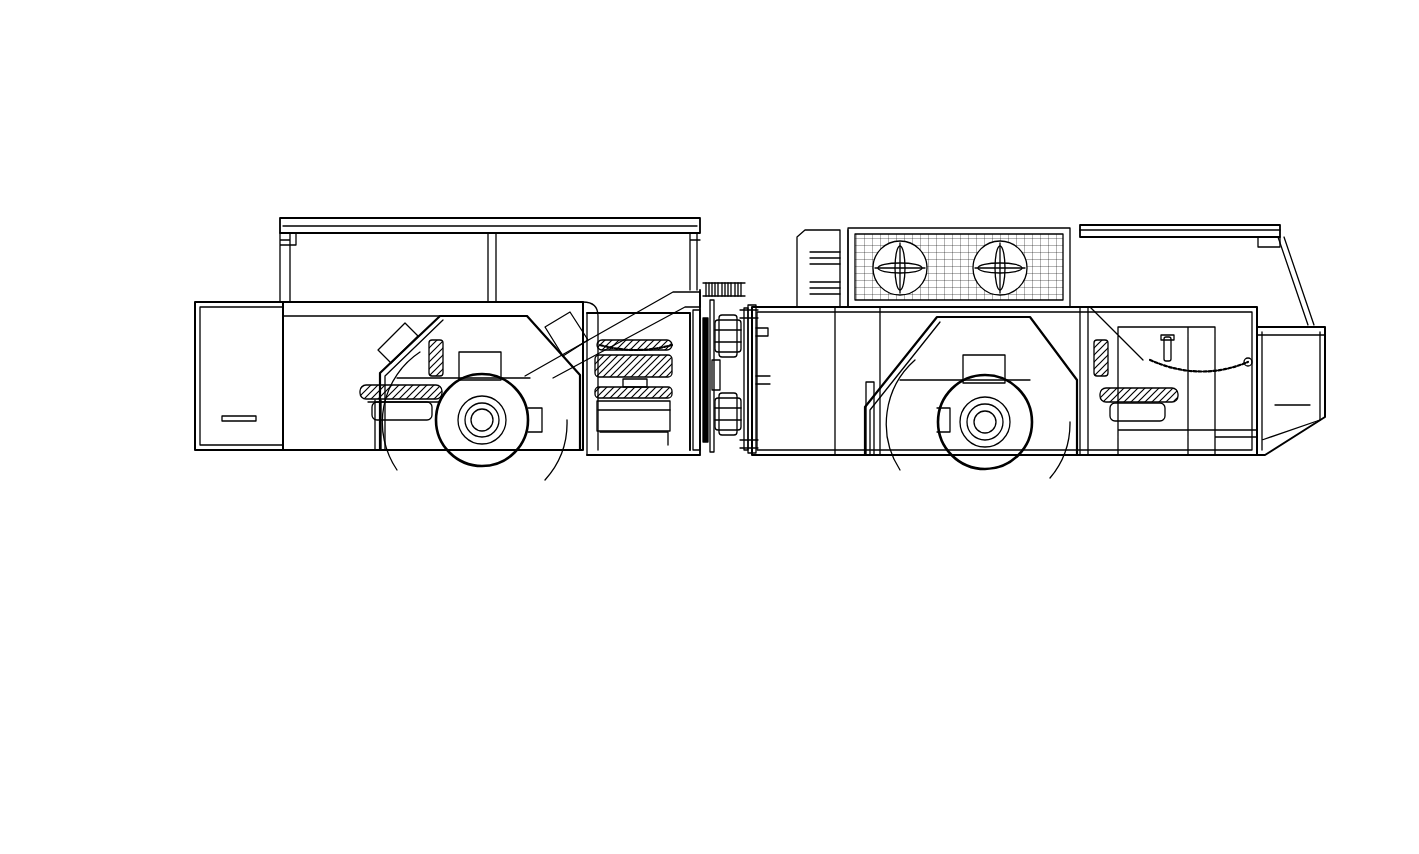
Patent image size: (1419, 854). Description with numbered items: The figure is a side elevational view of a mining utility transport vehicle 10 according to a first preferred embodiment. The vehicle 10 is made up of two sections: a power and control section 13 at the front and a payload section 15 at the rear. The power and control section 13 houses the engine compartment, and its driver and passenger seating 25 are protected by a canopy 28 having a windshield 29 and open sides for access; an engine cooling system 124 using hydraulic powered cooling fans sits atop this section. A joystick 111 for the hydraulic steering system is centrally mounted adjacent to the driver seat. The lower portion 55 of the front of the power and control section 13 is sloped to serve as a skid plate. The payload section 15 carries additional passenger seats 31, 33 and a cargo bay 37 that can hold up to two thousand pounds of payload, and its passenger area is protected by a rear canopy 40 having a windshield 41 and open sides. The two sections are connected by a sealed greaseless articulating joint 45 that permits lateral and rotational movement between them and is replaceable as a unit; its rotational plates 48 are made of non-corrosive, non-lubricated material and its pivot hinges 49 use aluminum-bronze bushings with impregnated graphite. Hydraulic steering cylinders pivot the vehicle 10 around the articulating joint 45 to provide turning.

The vehicle 10 is at (697, 135).
The power and control section 13 is at (1085, 445).
The payload section 15 is at (310, 420).
The passenger seating 25 is at (1140, 398).
The canopy 28 is at (1185, 228).
The windshield 29 is at (1300, 275).
The passenger seat 31 is at (625, 400).
The passenger seat 33 is at (382, 395).
The cargo bay 37 is at (228, 343).
The rear canopy 40 is at (527, 228).
The windshield 41 is at (700, 260).
The articulating joint 45 is at (707, 508).
The rotational plates 48 is at (722, 440).
The pivot hinges 49 is at (735, 323).
The lower portion 55 is at (1297, 445).
The joystick 111 is at (1170, 360).
The engine cooling system 124 is at (945, 238).